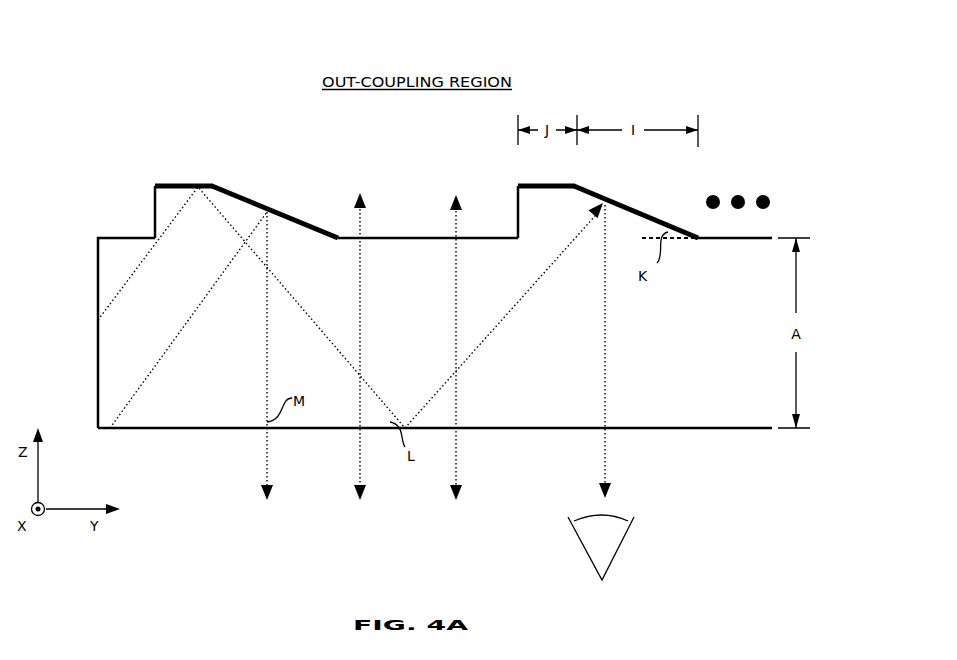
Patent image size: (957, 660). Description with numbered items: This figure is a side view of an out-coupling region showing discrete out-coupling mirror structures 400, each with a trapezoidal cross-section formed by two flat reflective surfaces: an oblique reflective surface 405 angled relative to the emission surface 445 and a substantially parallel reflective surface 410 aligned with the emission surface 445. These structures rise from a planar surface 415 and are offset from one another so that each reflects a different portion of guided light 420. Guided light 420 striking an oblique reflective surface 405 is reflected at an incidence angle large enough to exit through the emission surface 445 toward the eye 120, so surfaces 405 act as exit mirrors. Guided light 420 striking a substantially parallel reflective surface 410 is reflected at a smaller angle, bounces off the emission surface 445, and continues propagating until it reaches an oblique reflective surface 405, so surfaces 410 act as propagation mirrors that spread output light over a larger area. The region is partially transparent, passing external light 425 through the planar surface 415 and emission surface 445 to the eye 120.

The out-coupling mirror structures 400 is at (172, 106).
The oblique reflective surface 405 is at (247, 197).
The substantially parallel reflective surface 410 is at (156, 186).
The planar surface 415 is at (123, 238).
The guided light 420 is at (168, 348).
The external light 425 is at (363, 485).
The emission surface 445 is at (203, 428).
The eye 120 is at (583, 548).